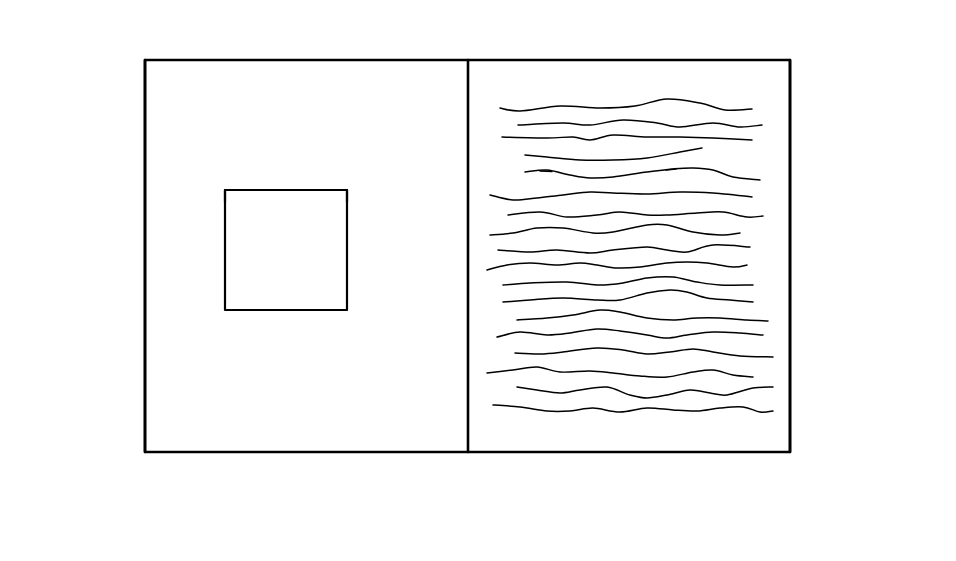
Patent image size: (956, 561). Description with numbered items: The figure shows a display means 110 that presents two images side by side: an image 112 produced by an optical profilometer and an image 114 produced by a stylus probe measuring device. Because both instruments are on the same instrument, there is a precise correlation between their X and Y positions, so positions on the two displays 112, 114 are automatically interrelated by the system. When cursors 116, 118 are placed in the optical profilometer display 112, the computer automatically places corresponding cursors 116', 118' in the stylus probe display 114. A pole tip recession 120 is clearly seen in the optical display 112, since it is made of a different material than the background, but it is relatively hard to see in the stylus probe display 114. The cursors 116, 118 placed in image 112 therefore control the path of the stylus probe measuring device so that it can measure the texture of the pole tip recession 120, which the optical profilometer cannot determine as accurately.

The display means 110 is at (116, 226).
The image from optical profilometer 112 is at (145, 100).
The image from stylus probe measuring device 114 is at (790, 98).
The cursor 116 is at (191, 175).
The cursor 118 is at (380, 175).
The cursor 116' is at (516, 168).
The cursor 118' is at (709, 166).
The pole tip recession 120 is at (287, 300).